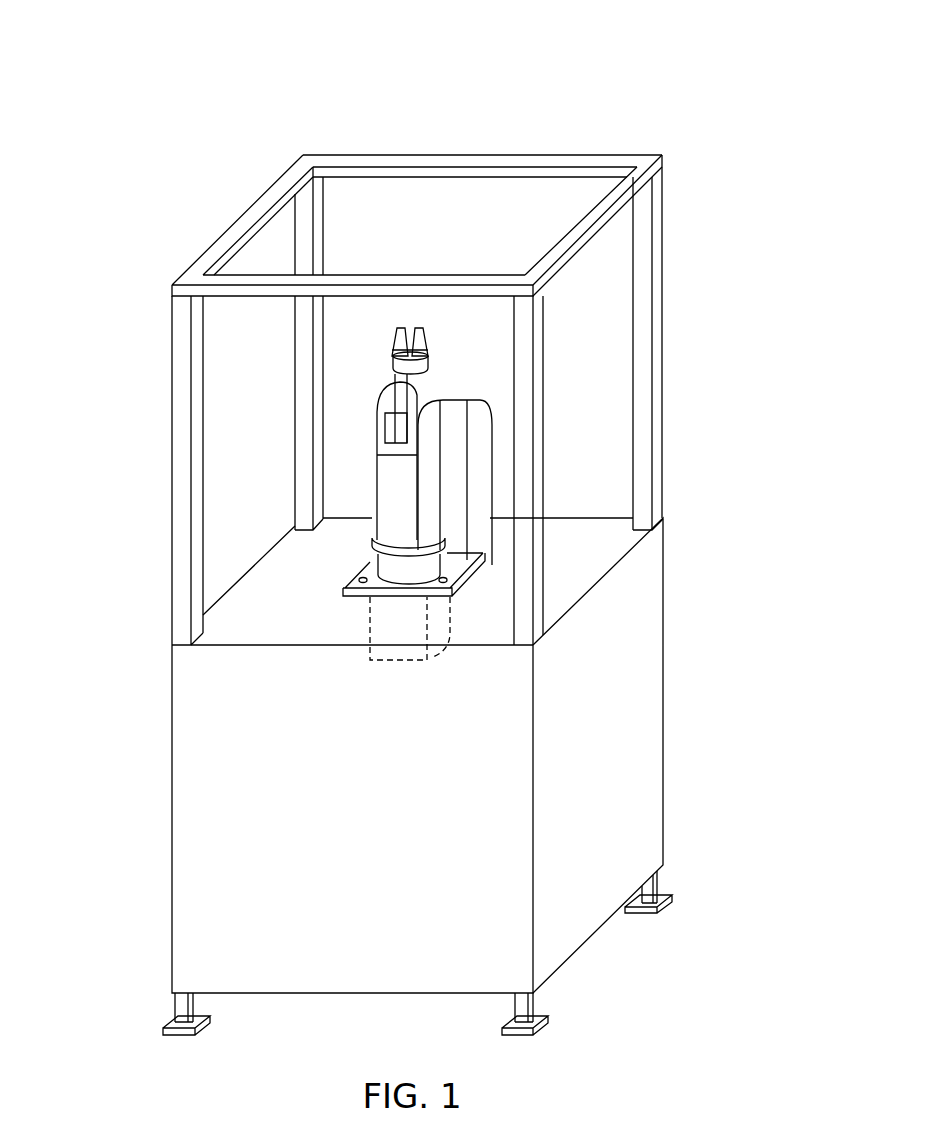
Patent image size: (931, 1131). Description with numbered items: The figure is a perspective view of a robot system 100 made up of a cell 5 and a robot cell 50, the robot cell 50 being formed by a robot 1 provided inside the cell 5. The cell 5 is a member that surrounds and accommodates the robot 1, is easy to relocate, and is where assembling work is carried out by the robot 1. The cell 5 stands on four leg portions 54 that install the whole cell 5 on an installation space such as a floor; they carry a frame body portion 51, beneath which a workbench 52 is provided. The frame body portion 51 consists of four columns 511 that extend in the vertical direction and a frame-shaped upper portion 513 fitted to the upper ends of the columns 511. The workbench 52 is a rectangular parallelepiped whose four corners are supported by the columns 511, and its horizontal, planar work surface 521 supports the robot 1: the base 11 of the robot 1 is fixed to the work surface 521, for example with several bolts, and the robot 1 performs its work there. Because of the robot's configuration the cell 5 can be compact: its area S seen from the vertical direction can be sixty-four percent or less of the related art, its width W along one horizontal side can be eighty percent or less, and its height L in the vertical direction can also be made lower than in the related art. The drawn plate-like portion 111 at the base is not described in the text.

The robot system 100 is at (704, 66).
The robot cell 50 is at (709, 140).
The cell 5 is at (667, 208).
The frame body portion 51 is at (504, 151).
The frame-shaped upper portion 513 is at (433, 159).
The column 511 is at (307, 222).
The robot 1 is at (439, 318).
The base 11 is at (469, 582).
The base plate 111 is at (467, 557).
The workbench 52 is at (637, 698).
The work surface 521 is at (270, 627).
The leg portion 54 is at (185, 1010).
The width W is at (662, 155).
The height L is at (160, 1033).
The area S is at (368, 150).